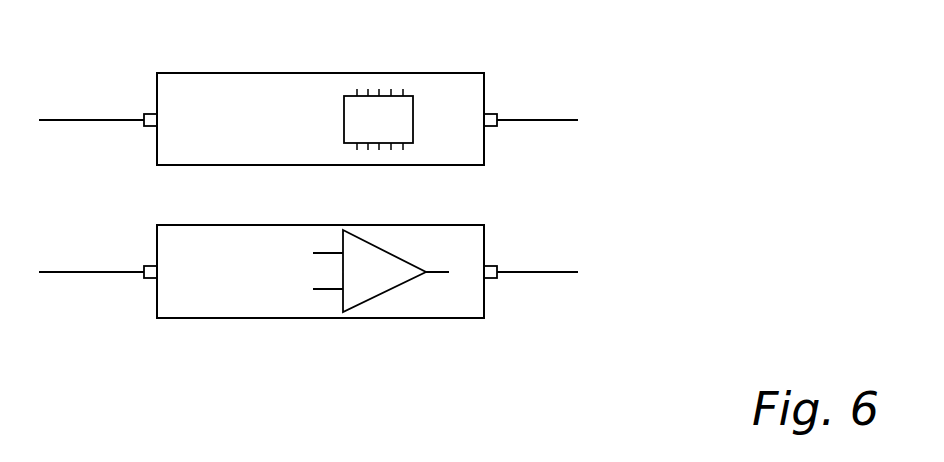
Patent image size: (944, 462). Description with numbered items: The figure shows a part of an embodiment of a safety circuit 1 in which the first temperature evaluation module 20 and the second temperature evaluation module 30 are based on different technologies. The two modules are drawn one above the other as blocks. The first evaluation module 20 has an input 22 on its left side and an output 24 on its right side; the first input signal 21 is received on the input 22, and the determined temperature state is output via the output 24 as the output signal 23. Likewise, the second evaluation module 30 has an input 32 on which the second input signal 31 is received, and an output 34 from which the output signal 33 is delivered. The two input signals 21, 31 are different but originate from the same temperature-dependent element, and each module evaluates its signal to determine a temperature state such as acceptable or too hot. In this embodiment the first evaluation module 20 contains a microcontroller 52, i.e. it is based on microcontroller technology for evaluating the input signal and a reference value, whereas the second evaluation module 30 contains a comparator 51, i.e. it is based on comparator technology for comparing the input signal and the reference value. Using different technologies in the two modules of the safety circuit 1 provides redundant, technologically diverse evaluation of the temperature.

The safety circuit 1 is at (657, 77).
The first temperature evaluation module 20 is at (294, 130).
The first input signal 21 is at (80, 118).
The input 22 is at (145, 113).
The output signal 23 is at (530, 118).
The output 24 is at (490, 113).
The second temperature evaluation module 30 is at (294, 282).
The second input signal 31 is at (80, 273).
The input 32 is at (147, 280).
The output signal 33 is at (530, 273).
The output 34 is at (490, 279).
The comparator 51 is at (382, 284).
The microcontroller 52 is at (394, 133).